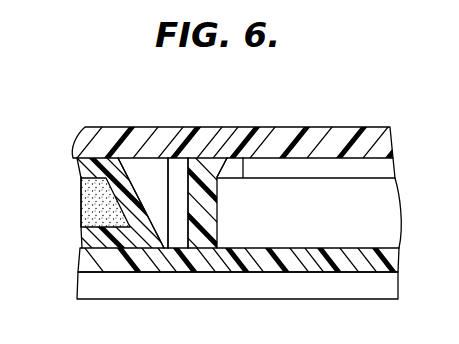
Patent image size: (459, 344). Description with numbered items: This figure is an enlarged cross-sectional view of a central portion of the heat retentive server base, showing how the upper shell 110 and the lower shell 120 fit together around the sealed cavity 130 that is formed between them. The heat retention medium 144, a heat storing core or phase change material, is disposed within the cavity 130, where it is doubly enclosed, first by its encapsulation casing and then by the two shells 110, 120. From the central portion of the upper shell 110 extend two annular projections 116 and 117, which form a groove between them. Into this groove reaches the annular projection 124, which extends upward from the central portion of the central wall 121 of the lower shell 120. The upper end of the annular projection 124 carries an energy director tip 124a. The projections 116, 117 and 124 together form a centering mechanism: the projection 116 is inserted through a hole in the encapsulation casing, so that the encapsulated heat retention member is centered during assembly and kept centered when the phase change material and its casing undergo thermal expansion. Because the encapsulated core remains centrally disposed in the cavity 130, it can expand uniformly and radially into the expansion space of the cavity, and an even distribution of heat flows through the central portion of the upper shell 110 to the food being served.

The upper shell 110 is at (117, 126).
The annular projection 117 is at (247, 172).
The energy director tip 124a is at (223, 160).
The annular projection 124 is at (218, 230).
The annular projection 116 is at (177, 241).
The cavity 130 is at (158, 172).
The heat retention medium 144 is at (82, 188).
The central wall 121 is at (323, 272).
The lower shell 120 is at (136, 280).